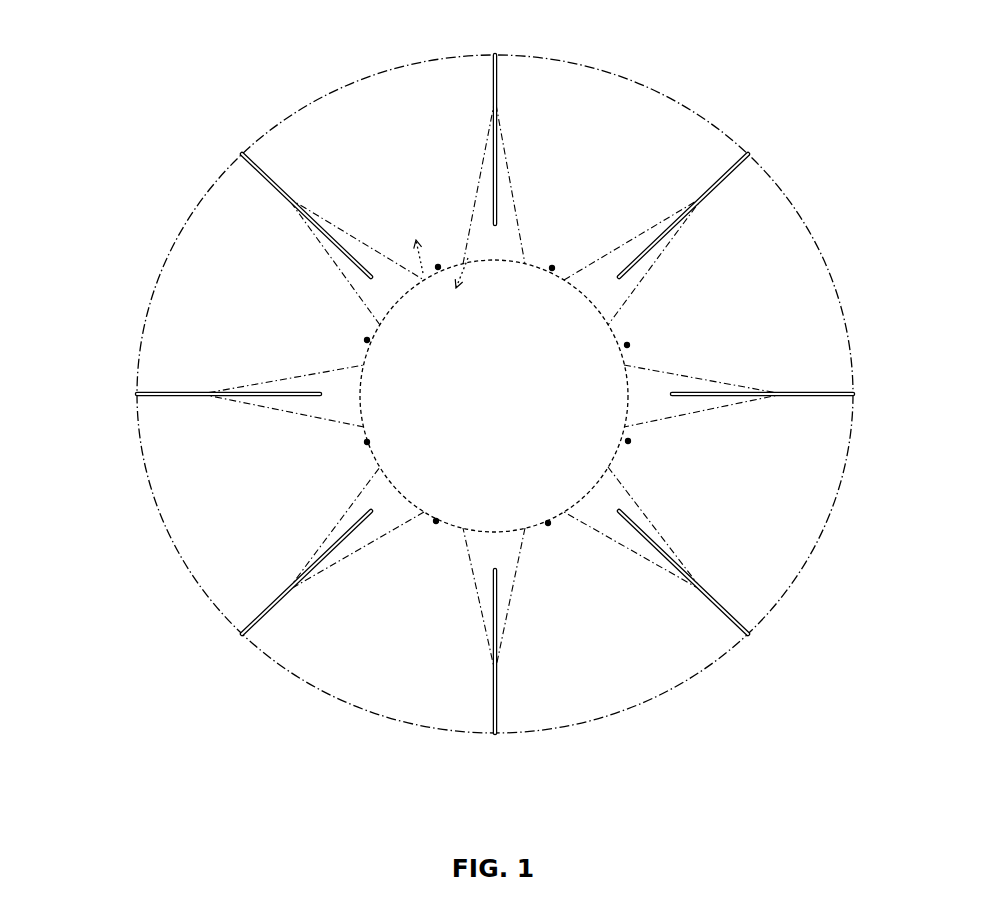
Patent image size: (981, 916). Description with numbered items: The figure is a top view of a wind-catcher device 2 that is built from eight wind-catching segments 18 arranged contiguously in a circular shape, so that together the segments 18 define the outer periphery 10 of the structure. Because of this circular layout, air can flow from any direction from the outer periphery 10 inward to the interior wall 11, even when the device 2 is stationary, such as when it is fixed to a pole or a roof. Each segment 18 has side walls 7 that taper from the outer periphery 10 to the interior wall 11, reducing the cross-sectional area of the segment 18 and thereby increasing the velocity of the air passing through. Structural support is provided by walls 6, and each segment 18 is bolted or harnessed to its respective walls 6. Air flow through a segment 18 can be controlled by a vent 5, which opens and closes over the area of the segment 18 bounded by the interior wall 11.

The wind-catcher device 2 is at (137, 298).
The outer periphery 10 is at (357, 73).
The wind-catching segment 18 is at (448, 118).
The wall 6 is at (499, 175).
The side wall 7 is at (477, 221).
The vent 5 is at (452, 252).
The interior wall 11 is at (436, 269).